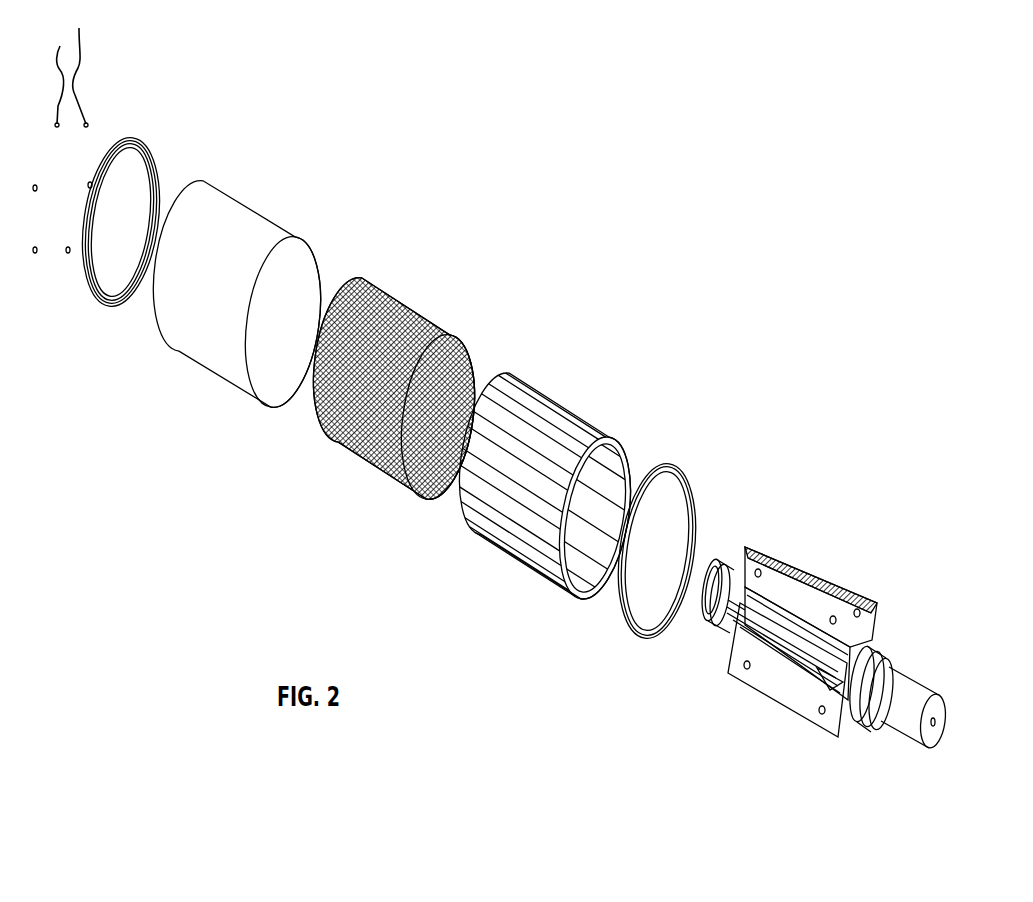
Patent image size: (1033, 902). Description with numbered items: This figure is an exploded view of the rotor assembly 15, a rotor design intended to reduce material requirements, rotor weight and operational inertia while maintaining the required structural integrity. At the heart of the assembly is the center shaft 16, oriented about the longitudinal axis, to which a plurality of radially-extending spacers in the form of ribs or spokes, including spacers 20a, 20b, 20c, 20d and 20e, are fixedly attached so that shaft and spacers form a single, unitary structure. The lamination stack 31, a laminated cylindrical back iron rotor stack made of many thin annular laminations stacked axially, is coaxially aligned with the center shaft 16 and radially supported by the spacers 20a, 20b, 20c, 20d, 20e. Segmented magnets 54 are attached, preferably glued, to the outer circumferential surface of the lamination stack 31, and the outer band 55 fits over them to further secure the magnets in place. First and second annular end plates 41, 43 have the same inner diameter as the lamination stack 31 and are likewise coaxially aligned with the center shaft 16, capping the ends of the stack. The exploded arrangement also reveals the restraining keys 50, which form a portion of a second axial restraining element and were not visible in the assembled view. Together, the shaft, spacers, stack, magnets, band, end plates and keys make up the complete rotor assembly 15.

The rotor assembly 15 is at (650, 124).
The center shaft 16 is at (898, 714).
The spacer 20a is at (808, 567).
The spacer 20b is at (772, 583).
The spacer 20c is at (750, 618).
The spacer 20d is at (780, 685).
The spacer 20e is at (850, 722).
The lamination stack 31 is at (557, 399).
The first annular end plate 41 is at (676, 468).
The second annular end plate 43 is at (136, 138).
The restraining keys 50 is at (72, 68).
The segmented magnets 54 is at (377, 286).
The outer band 55 is at (247, 205).